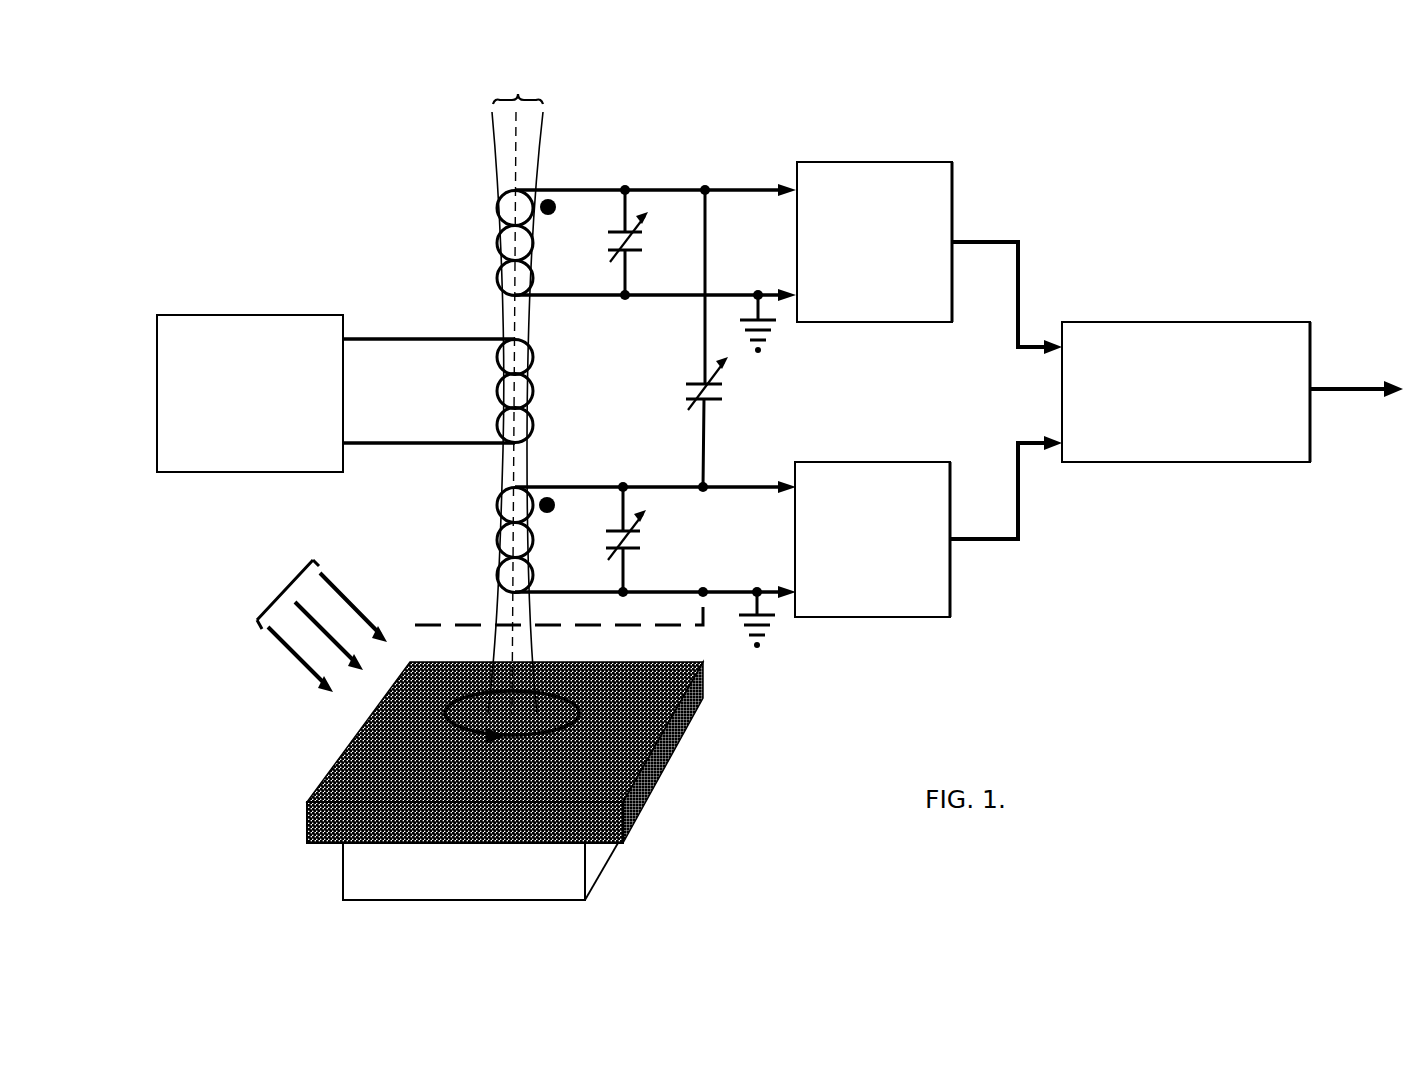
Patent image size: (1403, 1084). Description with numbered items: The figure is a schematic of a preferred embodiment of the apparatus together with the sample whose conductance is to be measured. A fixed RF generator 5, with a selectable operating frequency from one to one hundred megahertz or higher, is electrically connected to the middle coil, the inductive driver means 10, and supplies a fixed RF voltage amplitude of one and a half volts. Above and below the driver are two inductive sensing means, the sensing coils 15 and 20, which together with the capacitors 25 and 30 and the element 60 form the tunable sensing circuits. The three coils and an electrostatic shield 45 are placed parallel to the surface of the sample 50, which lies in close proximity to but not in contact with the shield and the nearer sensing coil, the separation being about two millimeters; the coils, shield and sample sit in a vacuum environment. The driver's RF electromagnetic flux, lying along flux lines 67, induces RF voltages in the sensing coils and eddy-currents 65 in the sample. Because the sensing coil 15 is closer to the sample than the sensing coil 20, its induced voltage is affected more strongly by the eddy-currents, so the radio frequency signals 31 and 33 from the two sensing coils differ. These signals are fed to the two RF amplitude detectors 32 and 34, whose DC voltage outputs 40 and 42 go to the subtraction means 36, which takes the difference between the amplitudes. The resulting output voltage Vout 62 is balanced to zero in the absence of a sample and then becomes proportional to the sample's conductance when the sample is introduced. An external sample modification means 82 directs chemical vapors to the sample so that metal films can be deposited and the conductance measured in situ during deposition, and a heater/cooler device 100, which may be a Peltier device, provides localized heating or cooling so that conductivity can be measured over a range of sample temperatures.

The fixed RF generator 5 is at (322, 343).
The inductive driver means 10 is at (548, 385).
The inductive sensing means 15 is at (490, 503).
The inductive sensing means 20 is at (493, 283).
The capacitor 25 is at (595, 517).
The capacitor 30 is at (597, 222).
The radio frequency signal 31 is at (757, 480).
The RF amplitude detector 32 is at (940, 600).
The radio frequency signal 33 is at (757, 183).
The RF amplitude detector 34 is at (935, 195).
The subtraction means 36 is at (1190, 445).
The DC voltage output 40 is at (1025, 520).
The DC voltage output 42 is at (1027, 268).
The electrostatic shield 45 is at (430, 622).
The sample 50 is at (645, 775).
The sensing circuit element 60 is at (725, 380).
The output voltage Vout 62 is at (1362, 400).
The eddy-currents 65 is at (435, 722).
The flux lines 67 is at (497, 91).
The external sample modification means 82 is at (245, 628).
The heater/cooler device 100 is at (600, 862).